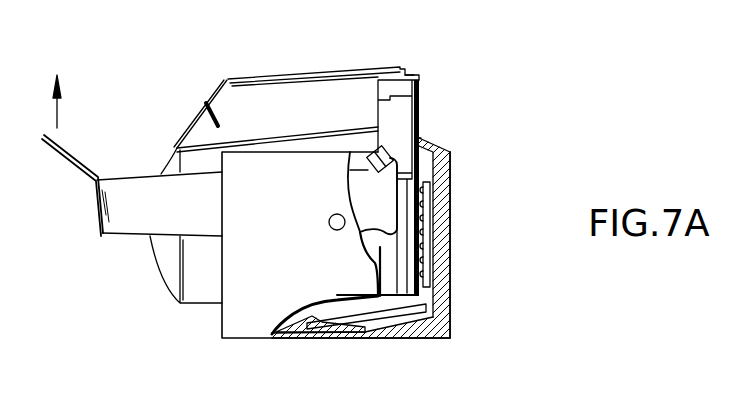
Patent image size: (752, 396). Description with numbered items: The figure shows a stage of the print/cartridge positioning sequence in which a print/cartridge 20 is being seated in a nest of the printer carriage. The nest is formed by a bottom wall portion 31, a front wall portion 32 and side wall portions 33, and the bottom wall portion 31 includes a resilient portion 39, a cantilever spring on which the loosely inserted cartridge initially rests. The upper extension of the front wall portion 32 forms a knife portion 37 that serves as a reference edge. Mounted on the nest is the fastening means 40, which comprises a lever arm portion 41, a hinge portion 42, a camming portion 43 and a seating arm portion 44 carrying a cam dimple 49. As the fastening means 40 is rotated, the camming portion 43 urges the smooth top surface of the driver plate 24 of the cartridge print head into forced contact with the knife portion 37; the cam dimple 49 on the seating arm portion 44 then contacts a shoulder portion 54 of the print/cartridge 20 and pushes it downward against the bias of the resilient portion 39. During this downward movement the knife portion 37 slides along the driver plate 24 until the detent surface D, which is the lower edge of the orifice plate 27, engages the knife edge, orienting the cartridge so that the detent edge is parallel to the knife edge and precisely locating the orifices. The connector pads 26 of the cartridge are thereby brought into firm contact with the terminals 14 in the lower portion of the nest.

The terminals 14 is at (426, 236).
The print/cartridge 20 is at (198, 120).
The driver plate 24 is at (418, 88).
The connector pads 26 is at (420, 294).
The orifice plate 27 is at (416, 90).
The bottom wall portion 31 is at (310, 338).
The front wall portion 32 is at (445, 268).
The side wall portions 33 is at (262, 203).
The knife portion 37 is at (421, 139).
The resilient portion 39 is at (382, 338).
The fastening means 40 is at (159, 213).
The lever arm portion 41 is at (80, 165).
The hinge portion 42 is at (329, 222).
The camming portion 43 is at (360, 232).
The seating arm portion 44 is at (348, 183).
The cam dimple 49 is at (368, 150).
The shoulder portion 54 is at (406, 131).
The detent surface D is at (421, 136).